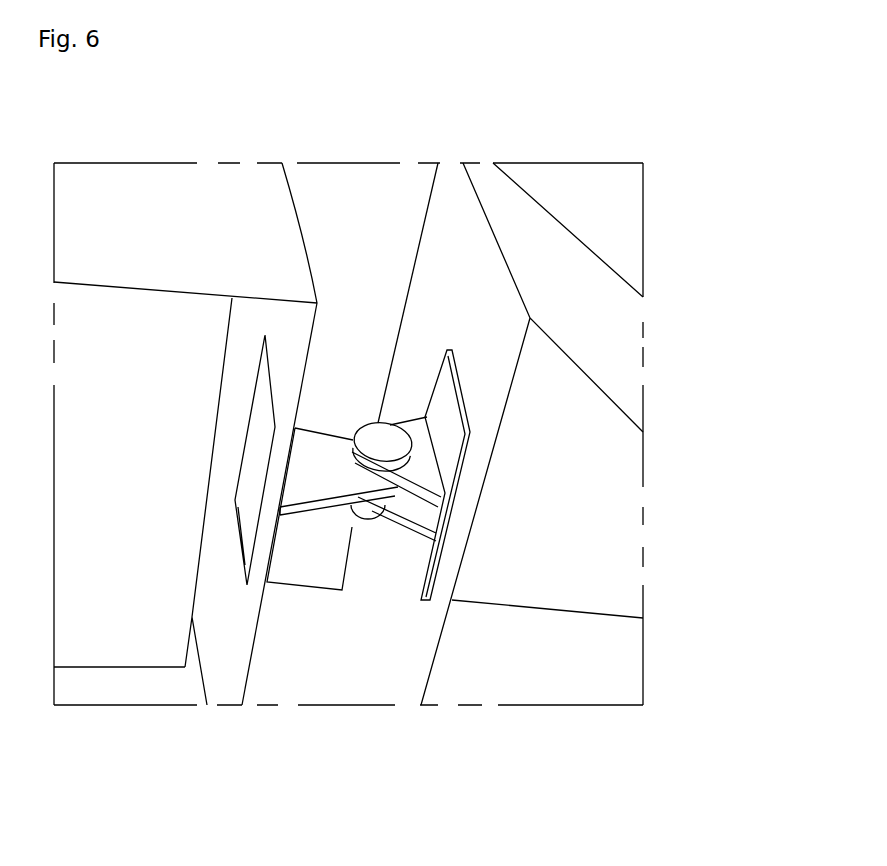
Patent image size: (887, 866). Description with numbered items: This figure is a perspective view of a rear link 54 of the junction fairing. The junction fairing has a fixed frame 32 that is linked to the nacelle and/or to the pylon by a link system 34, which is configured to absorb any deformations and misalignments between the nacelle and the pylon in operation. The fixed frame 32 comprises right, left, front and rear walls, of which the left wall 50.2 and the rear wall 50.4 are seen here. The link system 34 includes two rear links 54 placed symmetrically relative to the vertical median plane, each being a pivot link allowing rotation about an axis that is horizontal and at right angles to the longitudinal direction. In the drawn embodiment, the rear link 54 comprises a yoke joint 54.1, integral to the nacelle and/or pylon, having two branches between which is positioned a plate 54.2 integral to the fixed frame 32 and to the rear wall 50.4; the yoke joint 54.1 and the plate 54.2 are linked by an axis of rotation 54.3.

The left wall 50.2 is at (167, 247).
The rear wall 50.4 is at (240, 652).
The fixed frame 32 is at (216, 612).
The rear link 54 is at (340, 413).
The link system 34 is at (368, 407).
The yoke joint 54.1 is at (445, 438).
The plate 54.2 is at (303, 488).
The axis of rotation 54.3 is at (378, 445).